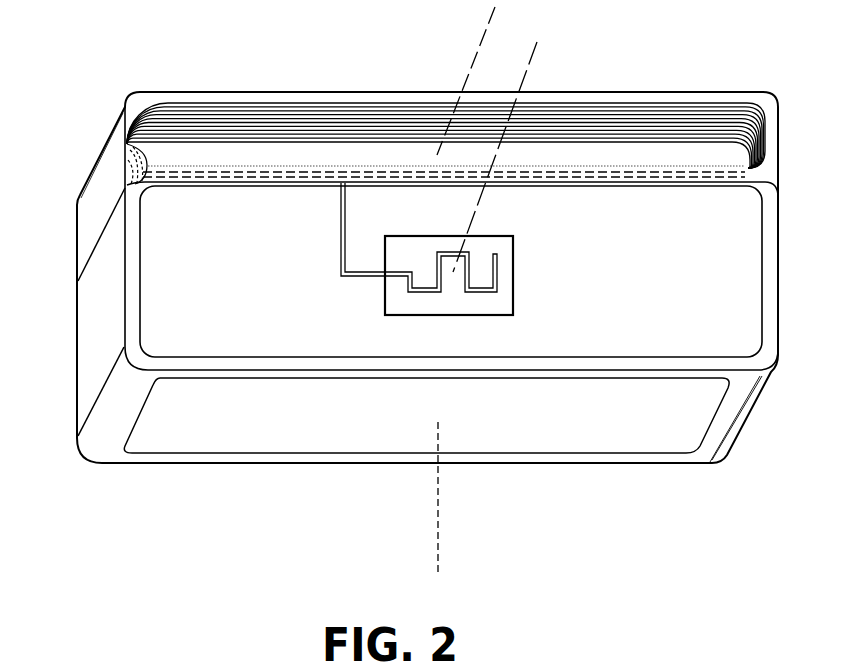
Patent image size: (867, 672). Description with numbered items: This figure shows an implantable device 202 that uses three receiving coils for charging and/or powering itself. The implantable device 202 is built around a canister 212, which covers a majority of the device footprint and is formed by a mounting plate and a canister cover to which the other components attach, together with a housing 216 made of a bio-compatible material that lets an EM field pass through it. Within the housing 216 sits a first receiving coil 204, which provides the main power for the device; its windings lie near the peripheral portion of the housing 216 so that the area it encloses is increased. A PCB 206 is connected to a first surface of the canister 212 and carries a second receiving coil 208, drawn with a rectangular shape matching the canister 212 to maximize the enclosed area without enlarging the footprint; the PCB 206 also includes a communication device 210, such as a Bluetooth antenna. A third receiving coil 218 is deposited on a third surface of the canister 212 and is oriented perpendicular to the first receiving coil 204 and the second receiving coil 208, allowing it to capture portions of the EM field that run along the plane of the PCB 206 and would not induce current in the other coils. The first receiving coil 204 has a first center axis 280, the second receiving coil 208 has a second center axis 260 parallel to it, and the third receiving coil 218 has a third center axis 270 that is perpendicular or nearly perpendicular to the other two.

The implantable device 202 is at (433, 286).
The first receiving coil 204 is at (562, 102).
The PCB 206 is at (486, 269).
The second receiving coil 208 is at (763, 262).
The communication device 210 is at (423, 256).
The canister 212 is at (358, 443).
The housing 216 is at (88, 213).
The third receiving coil 218 is at (717, 414).
The second center axis 260 is at (537, 42).
The third center axis 270 is at (438, 525).
The first center axis 280 is at (480, 35).